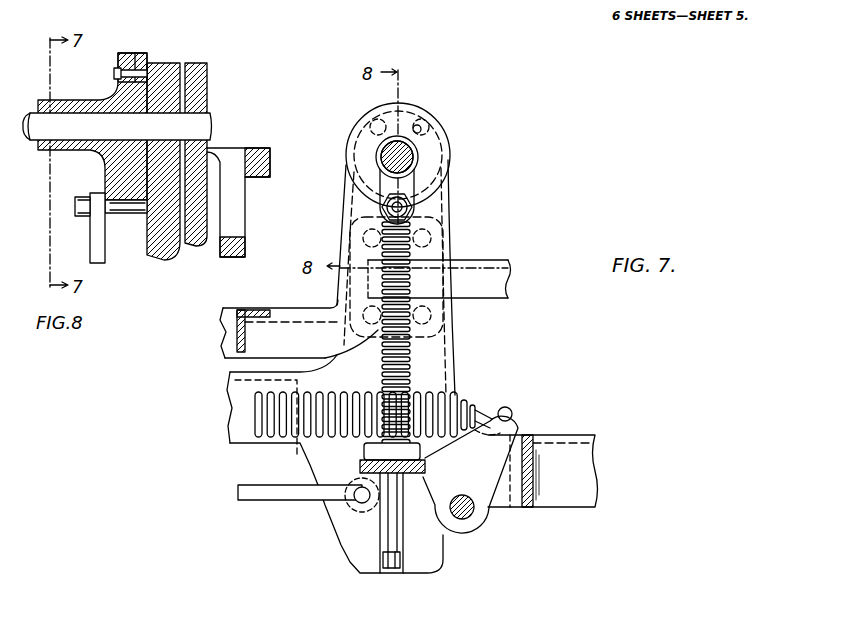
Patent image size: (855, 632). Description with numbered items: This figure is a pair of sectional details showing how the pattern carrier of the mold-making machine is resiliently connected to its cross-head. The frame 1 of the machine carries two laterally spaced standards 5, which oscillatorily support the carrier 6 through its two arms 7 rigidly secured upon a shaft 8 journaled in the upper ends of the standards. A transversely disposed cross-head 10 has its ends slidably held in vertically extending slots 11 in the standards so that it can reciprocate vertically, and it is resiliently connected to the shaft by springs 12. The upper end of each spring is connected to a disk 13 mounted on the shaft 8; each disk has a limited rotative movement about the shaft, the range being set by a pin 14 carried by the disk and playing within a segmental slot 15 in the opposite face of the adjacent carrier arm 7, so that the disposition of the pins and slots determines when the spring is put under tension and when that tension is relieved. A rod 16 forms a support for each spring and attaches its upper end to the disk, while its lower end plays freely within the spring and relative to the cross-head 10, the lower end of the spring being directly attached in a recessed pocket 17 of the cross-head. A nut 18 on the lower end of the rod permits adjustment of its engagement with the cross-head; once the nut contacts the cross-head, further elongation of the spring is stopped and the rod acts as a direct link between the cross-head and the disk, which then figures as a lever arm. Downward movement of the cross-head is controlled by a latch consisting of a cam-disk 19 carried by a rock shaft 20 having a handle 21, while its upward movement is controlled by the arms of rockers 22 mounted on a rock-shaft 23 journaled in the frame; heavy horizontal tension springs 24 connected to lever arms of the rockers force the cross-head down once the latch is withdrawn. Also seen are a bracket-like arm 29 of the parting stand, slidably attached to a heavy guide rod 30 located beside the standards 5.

In FIG. 7, the frame 1 is at (570, 492).
In FIG. 7, the standard 5 is at (443, 210).
In FIG. 7, the carrier 6 is at (232, 322).
In FIG. 8, the carrier arm 7 is at (163, 245).
In FIG. 7, the carrier arm 7 is at (350, 203).
In FIG. 8, the shaft 8 is at (30, 120).
In FIG. 7, the shaft 8 is at (417, 152).
In FIG. 7, the cross-head 10 is at (360, 466).
In FIG. 7, the slot 11 is at (380, 525).
In FIG. 7, the spring 12 is at (403, 357).
In FIG. 8, the disk 13 is at (103, 97).
In FIG. 7, the disk 13 is at (425, 170).
In FIG. 8, the pin 14 is at (135, 72).
In FIG. 7, the pin 14 is at (408, 142).
In FIG. 8, the segmental slot 15 is at (150, 72).
In FIG. 7, the segmental slot 15 is at (419, 124).
In FIG. 8, the rod 16 is at (97, 247).
In FIG. 7, the rod 16 is at (412, 295).
In FIG. 7, the recessed pocket 17 is at (362, 455).
In FIG. 7, the nut 18 is at (384, 562).
In FIG. 7, the cam-disk 19 is at (357, 482).
In FIG. 7, the rock shaft 20 is at (352, 500).
In FIG. 7, the handle 21 is at (275, 496).
In FIG. 7, the rocker 22 is at (490, 510).
In FIG. 7, the rock-shaft 23 is at (460, 520).
In FIG. 7, the tension spring 24 is at (258, 398).
In FIG. 7, the bracket-like arm 29 is at (465, 272).
In FIG. 8, the guide rod 30 is at (237, 228).